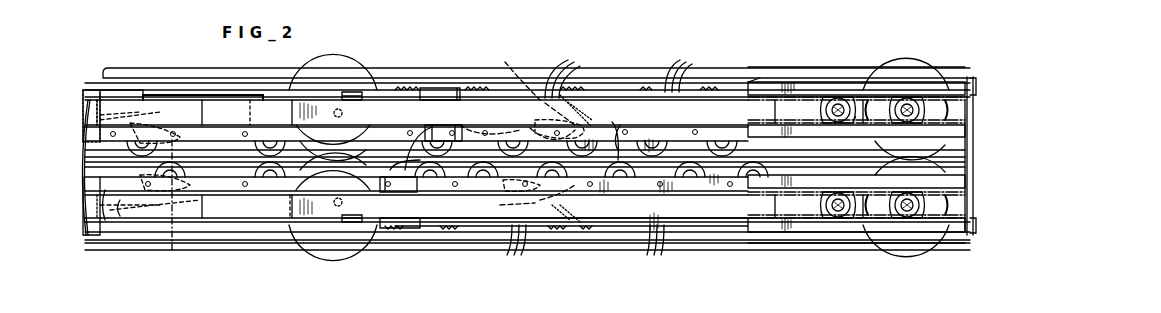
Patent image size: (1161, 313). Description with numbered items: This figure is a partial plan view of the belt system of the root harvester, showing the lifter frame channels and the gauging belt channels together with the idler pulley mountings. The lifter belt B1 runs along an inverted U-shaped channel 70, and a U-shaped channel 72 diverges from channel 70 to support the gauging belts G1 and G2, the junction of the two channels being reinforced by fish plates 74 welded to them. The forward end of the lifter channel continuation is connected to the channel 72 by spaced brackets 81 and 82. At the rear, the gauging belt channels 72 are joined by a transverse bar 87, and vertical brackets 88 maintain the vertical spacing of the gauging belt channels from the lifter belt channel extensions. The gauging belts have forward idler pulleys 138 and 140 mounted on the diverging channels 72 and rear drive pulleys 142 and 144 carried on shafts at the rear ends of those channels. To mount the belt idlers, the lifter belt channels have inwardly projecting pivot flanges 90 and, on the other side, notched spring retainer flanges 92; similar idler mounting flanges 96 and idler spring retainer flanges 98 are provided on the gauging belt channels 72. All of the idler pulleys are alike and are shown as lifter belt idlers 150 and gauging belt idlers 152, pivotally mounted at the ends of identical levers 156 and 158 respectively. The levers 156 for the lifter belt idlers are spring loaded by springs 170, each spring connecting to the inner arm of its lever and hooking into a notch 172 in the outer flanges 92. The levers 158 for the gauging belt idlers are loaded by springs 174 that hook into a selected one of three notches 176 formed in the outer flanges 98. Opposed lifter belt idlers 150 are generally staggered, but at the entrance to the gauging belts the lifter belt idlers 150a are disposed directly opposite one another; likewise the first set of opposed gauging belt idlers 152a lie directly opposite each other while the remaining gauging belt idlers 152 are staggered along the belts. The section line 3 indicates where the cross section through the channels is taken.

The section line 3- 3 is at (165, 232).
The inverted U-shaped channel 70 is at (150, 80).
The U-shaped channel 72 is at (705, 85).
The fish plates 74 is at (258, 105).
The bracket 81 is at (436, 88).
The bracket 82 is at (182, 70).
The transverse bar 87 is at (982, 143).
The vertical brackets 88 is at (978, 78).
The pivot flanges 90 is at (91, 178).
The spring retainer flanges 92 is at (110, 90).
The idler mounting flanges 96 is at (735, 130).
The idler spring retainer flanges 98 is at (605, 88).
The forward idler pulley 138 is at (326, 248).
The forward idler pulley 140 is at (322, 78).
The rear drive pulley 142 is at (905, 248).
The rear drive pulley 144 is at (903, 74).
The lifter belt idlers 150 is at (237, 104).
The lifter belt idlers 150a is at (355, 157).
The gauging belt idlers 152 is at (640, 132).
The gauging belt idlers 152a is at (440, 185).
The levers 156 is at (152, 128).
The levers 158 is at (505, 130).
The springs 170 is at (100, 111).
The notch 172 is at (95, 90).
The springs 174 is at (521, 132).
The notches 176 is at (598, 152).
The lifter belt B1 is at (240, 244).
The gauging belt G1 is at (808, 246).
The gauging belt G2 is at (780, 70).